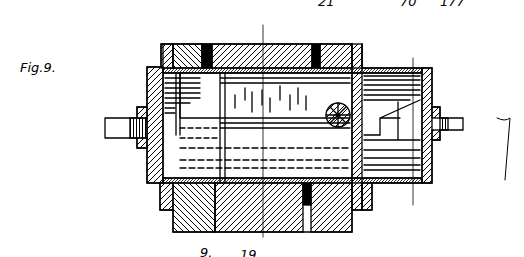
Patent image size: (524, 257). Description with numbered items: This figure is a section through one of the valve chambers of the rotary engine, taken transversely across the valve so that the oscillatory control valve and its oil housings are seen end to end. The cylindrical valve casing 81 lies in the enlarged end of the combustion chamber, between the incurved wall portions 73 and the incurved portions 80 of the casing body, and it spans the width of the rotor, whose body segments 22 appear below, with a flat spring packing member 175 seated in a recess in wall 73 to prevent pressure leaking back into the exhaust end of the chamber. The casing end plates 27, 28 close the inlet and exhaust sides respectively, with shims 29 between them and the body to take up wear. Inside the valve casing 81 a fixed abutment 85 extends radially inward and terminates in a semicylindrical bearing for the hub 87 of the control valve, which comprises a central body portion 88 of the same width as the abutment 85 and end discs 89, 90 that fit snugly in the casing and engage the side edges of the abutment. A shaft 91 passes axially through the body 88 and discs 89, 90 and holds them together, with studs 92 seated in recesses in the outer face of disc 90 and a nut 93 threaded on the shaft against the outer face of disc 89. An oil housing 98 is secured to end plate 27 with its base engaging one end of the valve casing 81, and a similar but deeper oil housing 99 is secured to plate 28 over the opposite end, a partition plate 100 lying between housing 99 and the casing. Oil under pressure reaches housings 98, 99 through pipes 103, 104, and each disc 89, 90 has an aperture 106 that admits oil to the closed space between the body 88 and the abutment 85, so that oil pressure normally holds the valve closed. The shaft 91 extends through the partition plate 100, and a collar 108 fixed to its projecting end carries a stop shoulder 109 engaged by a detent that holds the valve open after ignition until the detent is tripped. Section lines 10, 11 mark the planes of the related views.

The section line 10 is at (268, 28).
The section line 11 is at (413, 58).
The body segments 22 is at (240, 210).
The end plate 27 is at (190, 44).
The end plate 28 is at (346, 44).
The shims 29 is at (211, 44).
The incurved wall portions 73 is at (311, 212).
The incurved portions 80 is at (292, 44).
The valve casing 81 is at (240, 44).
The fixed abutment 85 is at (160, 90).
The hub 87 is at (223, 120).
The central body portion 88 is at (160, 187).
The end disc 89 is at (213, 120).
The end disc 90 is at (368, 208).
The shaft 91 is at (370, 138).
The studs 92 is at (330, 108).
The nut 93 is at (187, 120).
The oil housing 98 is at (150, 67).
The oil housing 99 is at (426, 86).
The partition plate 100 is at (356, 44).
The pipe 103 is at (103, 121).
The pipe 104 is at (463, 118).
The aperture 106 is at (167, 101).
The collar 108 is at (366, 113).
The stop shoulder 109 is at (432, 108).
The flat spring packing member 175 is at (217, 217).